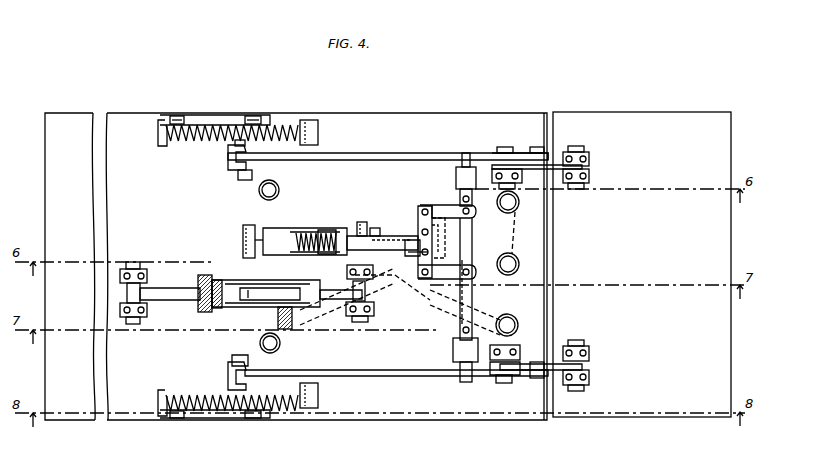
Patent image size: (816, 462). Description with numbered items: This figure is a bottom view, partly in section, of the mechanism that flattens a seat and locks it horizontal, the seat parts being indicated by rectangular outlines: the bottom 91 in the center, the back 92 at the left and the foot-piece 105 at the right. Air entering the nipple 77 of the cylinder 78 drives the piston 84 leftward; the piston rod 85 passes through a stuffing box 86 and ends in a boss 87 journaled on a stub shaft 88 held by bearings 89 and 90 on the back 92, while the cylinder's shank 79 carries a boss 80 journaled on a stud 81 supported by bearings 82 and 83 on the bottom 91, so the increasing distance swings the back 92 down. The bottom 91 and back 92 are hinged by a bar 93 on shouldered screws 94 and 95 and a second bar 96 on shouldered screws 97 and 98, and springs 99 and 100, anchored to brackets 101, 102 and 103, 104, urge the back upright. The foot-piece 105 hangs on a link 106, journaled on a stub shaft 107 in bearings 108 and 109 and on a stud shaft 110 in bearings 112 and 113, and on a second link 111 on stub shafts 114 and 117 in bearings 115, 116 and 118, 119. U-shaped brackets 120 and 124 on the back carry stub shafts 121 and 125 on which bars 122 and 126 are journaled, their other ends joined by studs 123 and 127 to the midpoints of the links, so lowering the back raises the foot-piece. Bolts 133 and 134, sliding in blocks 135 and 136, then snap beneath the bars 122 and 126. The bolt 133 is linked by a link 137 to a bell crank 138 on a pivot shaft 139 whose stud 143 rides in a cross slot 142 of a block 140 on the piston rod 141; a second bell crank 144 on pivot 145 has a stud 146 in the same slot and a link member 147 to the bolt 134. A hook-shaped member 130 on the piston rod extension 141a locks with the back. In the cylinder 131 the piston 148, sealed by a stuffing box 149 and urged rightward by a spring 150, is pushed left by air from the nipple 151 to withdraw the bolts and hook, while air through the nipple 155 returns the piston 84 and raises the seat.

The nipple 77 is at (292, 280).
The cylinder 78 is at (273, 308).
The shank 79 is at (332, 289).
The boss 80 is at (366, 289).
The stud 81 is at (370, 314).
The bearing 82 is at (350, 320).
The bearing 83 is at (366, 272).
The piston 84 is at (222, 282).
The piston rod 85 is at (166, 297).
The stuffing box 86 is at (200, 314).
The boss 87 is at (132, 296).
The stub shaft 88 is at (130, 270).
The bearing 89 is at (138, 270).
The bearing 90 is at (132, 322).
The bottom 91 is at (415, 414).
The back 92 is at (140, 413).
The bar 93 is at (218, 412).
The shouldered screw 94 is at (257, 418).
The shouldered screw 95 is at (175, 418).
The second bar 96 is at (217, 122).
The shouldered screw 97 is at (255, 116).
The shouldered screw 98 is at (176, 116).
The spring 99 is at (282, 408).
The spring 100 is at (286, 128).
The bracket 101 is at (318, 394).
The bracket 102 is at (160, 396).
The bracket 103 is at (318, 132).
The bracket 104 is at (160, 140).
The foot-piece 105 is at (612, 418).
The link 106 is at (518, 362).
The stub shaft 107 is at (578, 342).
The bearing 108 is at (590, 352).
The bearing 109 is at (590, 376).
The stud shaft 110 is at (506, 386).
The second link 111 is at (556, 164).
The bearing 112 is at (497, 380).
The bearing 113 is at (512, 336).
The stub shaft 114 is at (580, 148).
The bearing 115 is at (590, 158).
The bearing 116 is at (590, 176).
The stub shaft 117 is at (511, 147).
The bearing 118 is at (500, 150).
The bearing 119 is at (517, 184).
The U-shaped bracket 120 is at (233, 380).
The stub shaft 121 is at (238, 356).
The bar 122 is at (348, 372).
The stud 123 is at (542, 377).
The U-shaped bracket 124 is at (232, 168).
The stub shaft 125 is at (242, 180).
The bar 126 is at (367, 158).
The stud 127 is at (539, 150).
The second hook-shaped member 130 is at (272, 228).
The cylinder 131 is at (300, 231).
The bolt 133 is at (465, 380).
The bolt 134 is at (465, 152).
The block 135 is at (453, 352).
The block 136 is at (456, 182).
The link 137 is at (474, 302).
The bell crank 138 is at (458, 273).
The pivot shaft 139 is at (248, 226).
The block 140 is at (414, 240).
The piston rod 141 is at (390, 237).
The piston rod extension 141a is at (280, 192).
The cross slot 142 is at (442, 254).
The stud 143 is at (413, 253).
The second bell crank 144 is at (446, 210).
The pivot 145 is at (424, 208).
The stud 146 is at (440, 224).
The link member 147 is at (472, 212).
The piston 148 is at (336, 236).
The stuffing box 149 is at (376, 228).
The spring 150 is at (322, 230).
The nipple 151 is at (362, 222).
The nipple 155 is at (222, 328).